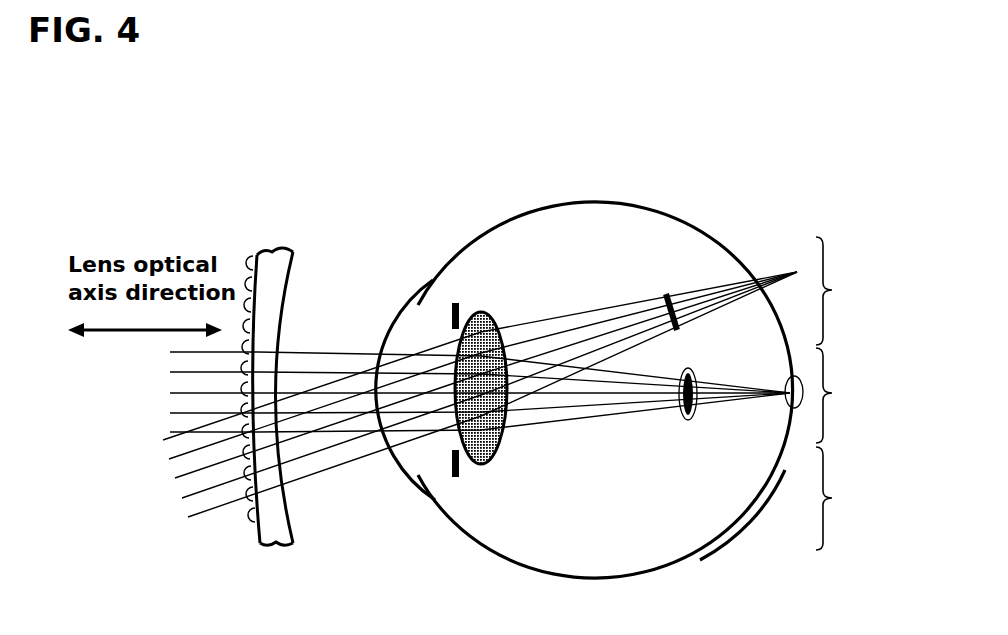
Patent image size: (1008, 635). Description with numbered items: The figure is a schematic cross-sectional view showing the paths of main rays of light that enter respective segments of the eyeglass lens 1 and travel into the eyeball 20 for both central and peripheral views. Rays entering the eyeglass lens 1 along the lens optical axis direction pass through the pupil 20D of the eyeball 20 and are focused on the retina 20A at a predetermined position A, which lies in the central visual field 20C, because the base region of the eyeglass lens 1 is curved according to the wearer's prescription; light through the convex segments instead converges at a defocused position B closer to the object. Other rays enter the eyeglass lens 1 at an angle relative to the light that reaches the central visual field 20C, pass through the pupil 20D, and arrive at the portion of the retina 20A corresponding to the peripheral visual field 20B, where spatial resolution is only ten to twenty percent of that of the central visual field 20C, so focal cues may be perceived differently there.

The eyeglass lens 1 is at (264, 244).
The eyeball 20 is at (730, 207).
The retina 20A is at (770, 496).
The peripheral visual field 20B is at (857, 393).
The central visual field 20C is at (857, 395).
The pupil 20D is at (448, 334).